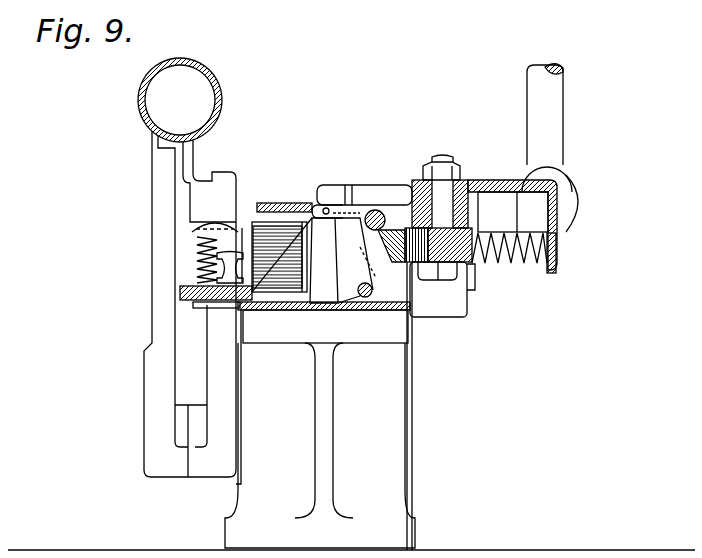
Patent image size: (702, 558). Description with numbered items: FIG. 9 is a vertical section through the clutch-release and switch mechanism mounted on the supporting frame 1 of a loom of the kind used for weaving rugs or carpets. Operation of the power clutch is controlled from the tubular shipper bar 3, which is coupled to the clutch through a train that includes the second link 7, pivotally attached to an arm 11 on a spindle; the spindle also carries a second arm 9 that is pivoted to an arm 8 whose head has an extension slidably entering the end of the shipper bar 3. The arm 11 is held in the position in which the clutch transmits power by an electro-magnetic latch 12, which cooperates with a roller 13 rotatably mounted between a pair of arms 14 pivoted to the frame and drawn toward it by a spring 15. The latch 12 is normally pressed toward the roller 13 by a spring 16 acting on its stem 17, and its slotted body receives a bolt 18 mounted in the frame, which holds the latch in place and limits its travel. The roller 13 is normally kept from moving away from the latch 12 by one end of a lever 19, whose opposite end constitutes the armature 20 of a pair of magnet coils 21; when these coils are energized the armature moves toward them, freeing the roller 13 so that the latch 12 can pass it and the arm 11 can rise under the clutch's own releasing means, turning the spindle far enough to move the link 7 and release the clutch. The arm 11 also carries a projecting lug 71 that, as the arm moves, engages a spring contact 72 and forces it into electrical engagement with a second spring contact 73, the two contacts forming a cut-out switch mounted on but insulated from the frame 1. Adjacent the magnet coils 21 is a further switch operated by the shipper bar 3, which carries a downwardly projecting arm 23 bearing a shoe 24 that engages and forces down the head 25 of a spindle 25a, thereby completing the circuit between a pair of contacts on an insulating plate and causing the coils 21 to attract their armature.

The supporting frame 1 is at (404, 405).
The shipper bar 3 is at (216, 88).
The second link 7 is at (553, 107).
The arm 8 is at (152, 322).
The second arm 9 is at (207, 346).
The arm 11 is at (468, 178).
The electro-magnetic latch 12 is at (391, 237).
The roller 13 is at (380, 212).
The arms 14 is at (372, 247).
The spring 15 is at (358, 292).
The spring 16 is at (509, 258).
The stem 17 is at (557, 258).
The bolt 18 is at (438, 280).
The lever 19 is at (330, 187).
The armature 20 is at (275, 203).
The magnet coils 21 is at (283, 310).
The downwardly projecting arm 23 is at (203, 193).
The shoe 24 is at (205, 228).
The head 25 is at (200, 258).
The spindle 25a is at (222, 272).
The projecting lug 71 is at (353, 193).
The spring contact 72 is at (305, 228).
The second spring contact 73 is at (336, 250).